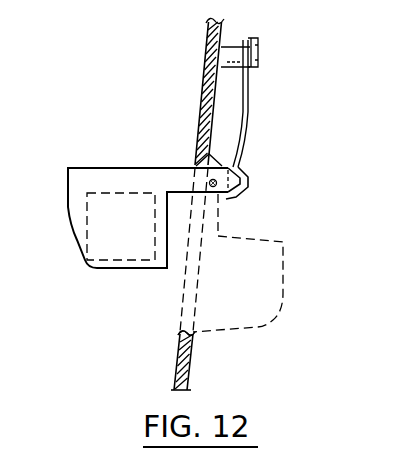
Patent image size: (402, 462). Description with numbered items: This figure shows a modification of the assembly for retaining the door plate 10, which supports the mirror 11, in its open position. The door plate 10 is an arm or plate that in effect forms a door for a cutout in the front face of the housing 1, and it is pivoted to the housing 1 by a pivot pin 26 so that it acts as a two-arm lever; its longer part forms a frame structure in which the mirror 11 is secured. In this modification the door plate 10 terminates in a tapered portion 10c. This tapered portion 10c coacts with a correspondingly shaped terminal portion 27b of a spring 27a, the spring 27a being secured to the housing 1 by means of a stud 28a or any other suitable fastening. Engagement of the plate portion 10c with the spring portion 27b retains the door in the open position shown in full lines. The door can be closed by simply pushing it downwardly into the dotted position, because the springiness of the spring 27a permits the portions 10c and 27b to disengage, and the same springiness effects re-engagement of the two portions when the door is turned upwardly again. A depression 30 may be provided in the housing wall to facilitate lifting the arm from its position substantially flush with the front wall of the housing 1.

The housing 1 is at (203, 89).
The door plate 10 is at (124, 178).
The tapered portion 10c is at (232, 195).
The mirror 11 is at (87, 212).
The pivot pin 26 is at (220, 178).
The spring 27a is at (242, 133).
The terminal portion of spring 27b is at (249, 181).
The stud 28a is at (228, 49).
The depression 30 is at (181, 334).